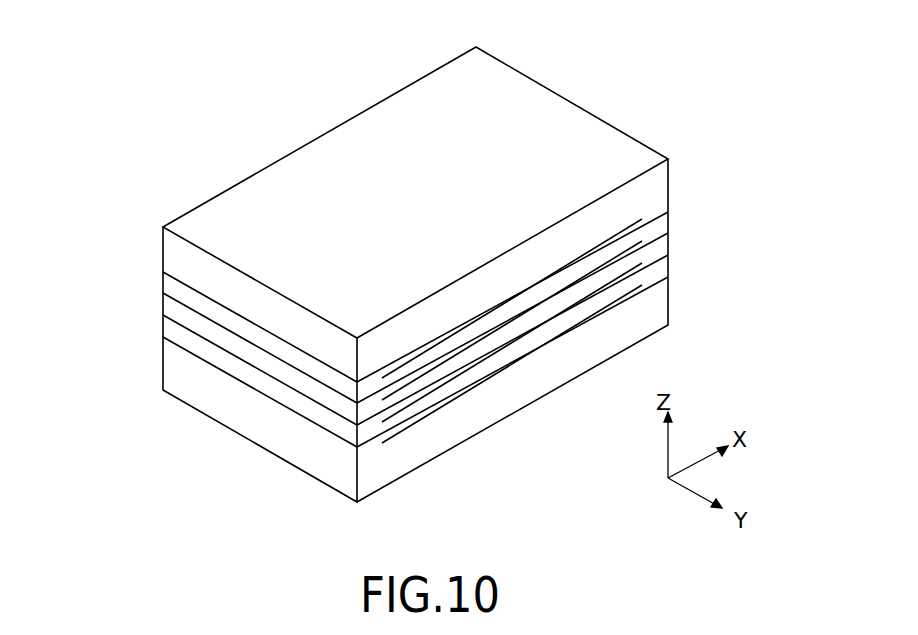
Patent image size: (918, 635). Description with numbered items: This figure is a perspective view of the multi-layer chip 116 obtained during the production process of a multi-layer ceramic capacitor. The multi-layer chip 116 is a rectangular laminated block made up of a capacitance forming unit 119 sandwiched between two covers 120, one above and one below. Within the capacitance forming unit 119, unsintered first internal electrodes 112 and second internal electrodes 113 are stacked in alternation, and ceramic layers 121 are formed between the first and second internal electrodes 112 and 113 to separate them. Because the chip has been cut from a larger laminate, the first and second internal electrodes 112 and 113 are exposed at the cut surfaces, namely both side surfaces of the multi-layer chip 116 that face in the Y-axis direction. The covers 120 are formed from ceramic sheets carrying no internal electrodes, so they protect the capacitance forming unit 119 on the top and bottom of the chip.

The multi-layer chip 116 is at (592, 82).
The first internal electrodes 112 is at (270, 400).
The second internal electrodes 113 is at (668, 212).
The capacitance forming unit 119 is at (158, 272).
The covers 120 is at (158, 227).
The ceramic layers 121 is at (578, 297).